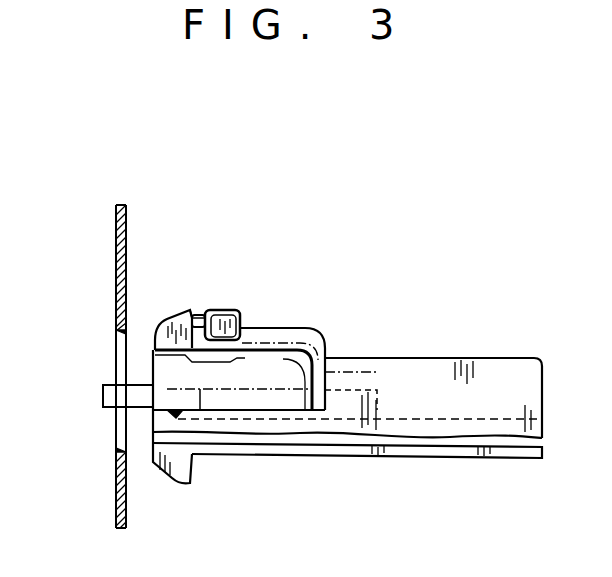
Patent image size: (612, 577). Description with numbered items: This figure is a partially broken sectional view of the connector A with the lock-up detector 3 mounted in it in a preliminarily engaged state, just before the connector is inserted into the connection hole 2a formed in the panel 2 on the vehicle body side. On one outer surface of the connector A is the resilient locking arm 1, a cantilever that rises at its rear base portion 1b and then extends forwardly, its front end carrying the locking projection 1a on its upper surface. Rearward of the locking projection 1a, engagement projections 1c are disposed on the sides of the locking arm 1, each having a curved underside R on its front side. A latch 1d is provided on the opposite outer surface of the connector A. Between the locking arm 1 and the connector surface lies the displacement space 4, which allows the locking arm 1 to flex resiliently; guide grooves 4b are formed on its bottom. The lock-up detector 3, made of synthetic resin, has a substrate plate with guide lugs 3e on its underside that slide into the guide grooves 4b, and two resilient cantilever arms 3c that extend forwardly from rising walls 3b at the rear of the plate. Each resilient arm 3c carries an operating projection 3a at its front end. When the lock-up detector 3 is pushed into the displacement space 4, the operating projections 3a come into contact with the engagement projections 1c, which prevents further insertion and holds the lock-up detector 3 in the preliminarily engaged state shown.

The resilient locking arm 1 is at (288, 327).
The locking projection 1a is at (167, 317).
The rear base portion 1b is at (325, 346).
The engagement projections 1c is at (236, 307).
The latch 1d is at (178, 470).
The panel 2 is at (115, 508).
The connection hole 2a is at (117, 331).
The lock-up detector 3 is at (283, 359).
The operating projections 3a is at (196, 316).
The rising walls 3b is at (377, 372).
The resilient arms 3c is at (256, 328).
The guide lugs 3e is at (170, 420).
The displacement space 4 is at (153, 349).
The guide grooves 4b is at (272, 425).
The curved underside R is at (206, 314).
The connector A is at (508, 368).